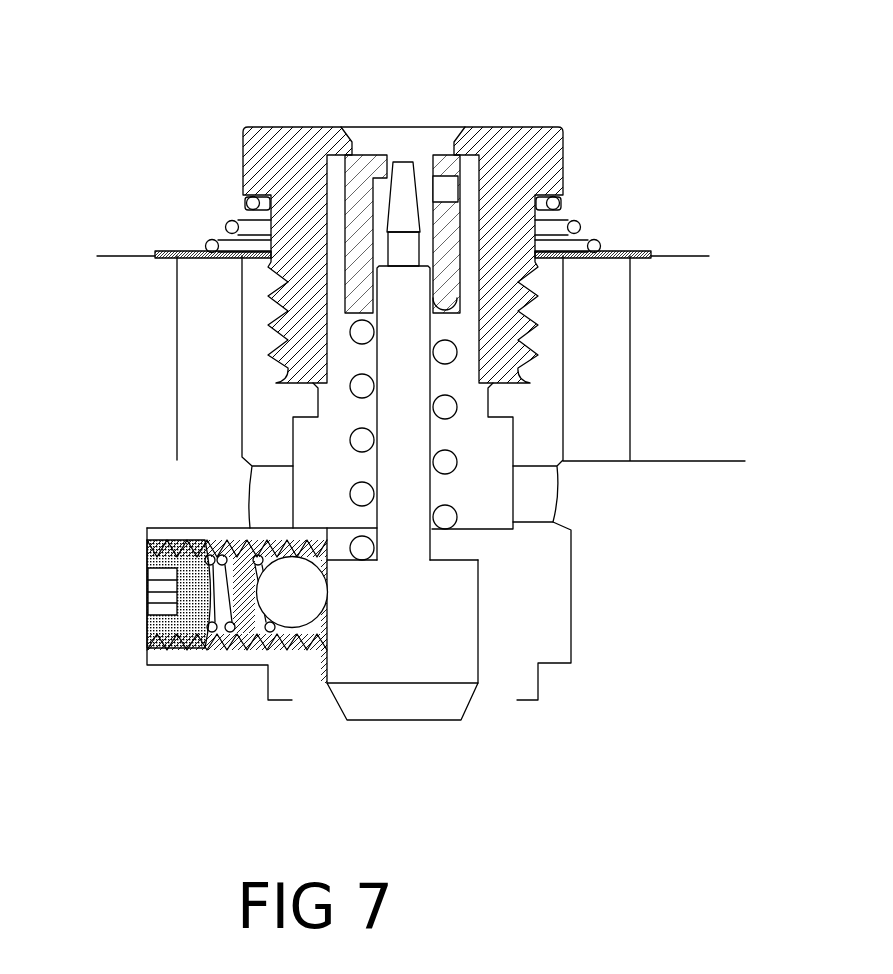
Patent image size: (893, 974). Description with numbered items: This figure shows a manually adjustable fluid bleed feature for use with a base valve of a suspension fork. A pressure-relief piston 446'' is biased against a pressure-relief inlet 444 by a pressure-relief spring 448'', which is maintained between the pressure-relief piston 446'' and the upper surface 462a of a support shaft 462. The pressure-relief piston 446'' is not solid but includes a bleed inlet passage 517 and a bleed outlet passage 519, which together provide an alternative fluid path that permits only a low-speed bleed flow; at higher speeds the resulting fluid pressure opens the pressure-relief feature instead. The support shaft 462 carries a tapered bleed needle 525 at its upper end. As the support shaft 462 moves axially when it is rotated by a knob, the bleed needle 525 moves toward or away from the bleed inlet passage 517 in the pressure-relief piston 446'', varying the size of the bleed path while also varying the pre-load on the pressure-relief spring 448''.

The pressure-relief inlet 444 is at (377, 132).
The pressure-relief piston 446'' is at (254, 234).
The pressure-relief spring 448'' is at (262, 429).
The bleed inlet passage 517 is at (412, 158).
The bleed outlet passage 519 is at (435, 218).
The tapered bleed needle 525 is at (403, 193).
The support shaft 462 is at (415, 665).
The upper surface of shaft 462a is at (440, 562).